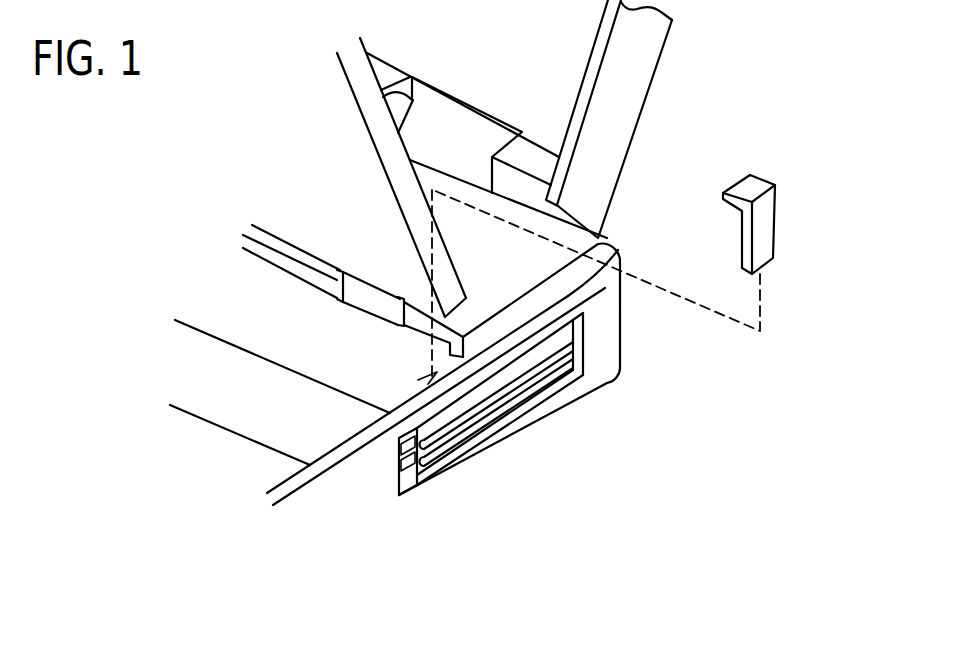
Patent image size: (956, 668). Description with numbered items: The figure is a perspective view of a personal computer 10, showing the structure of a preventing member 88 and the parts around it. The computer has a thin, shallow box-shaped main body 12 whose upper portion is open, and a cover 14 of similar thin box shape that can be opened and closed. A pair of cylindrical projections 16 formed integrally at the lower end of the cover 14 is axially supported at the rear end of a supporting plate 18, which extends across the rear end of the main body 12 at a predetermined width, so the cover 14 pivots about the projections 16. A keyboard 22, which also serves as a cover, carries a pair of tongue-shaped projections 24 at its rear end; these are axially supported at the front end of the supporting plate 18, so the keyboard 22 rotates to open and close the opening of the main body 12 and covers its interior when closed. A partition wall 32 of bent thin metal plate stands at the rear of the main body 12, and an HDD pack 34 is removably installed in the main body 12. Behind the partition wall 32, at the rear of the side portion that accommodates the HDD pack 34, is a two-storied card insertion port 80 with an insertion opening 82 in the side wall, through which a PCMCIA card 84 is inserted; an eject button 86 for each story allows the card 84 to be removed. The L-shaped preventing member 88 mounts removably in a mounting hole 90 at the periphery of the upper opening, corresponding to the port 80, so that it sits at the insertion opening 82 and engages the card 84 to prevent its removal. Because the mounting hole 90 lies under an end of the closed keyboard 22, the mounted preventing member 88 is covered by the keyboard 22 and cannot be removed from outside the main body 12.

The personal computer 10 is at (352, 566).
The main body 12 is at (380, 523).
The cover 14 is at (650, 93).
The projections 16 is at (458, 140).
The supporting plate 18 is at (537, 270).
The keyboard 22 is at (412, 77).
The projections 24 is at (364, 298).
The partition wall 32 is at (247, 417).
The HDD pack 34 is at (690, 667).
The card insertion port 80 is at (473, 437).
The insertion opening 82 is at (577, 353).
The PCMCIA card 84 is at (520, 427).
The eject button 86 is at (417, 458).
The preventing member 88 is at (765, 217).
The mounting hole 90 is at (420, 378).